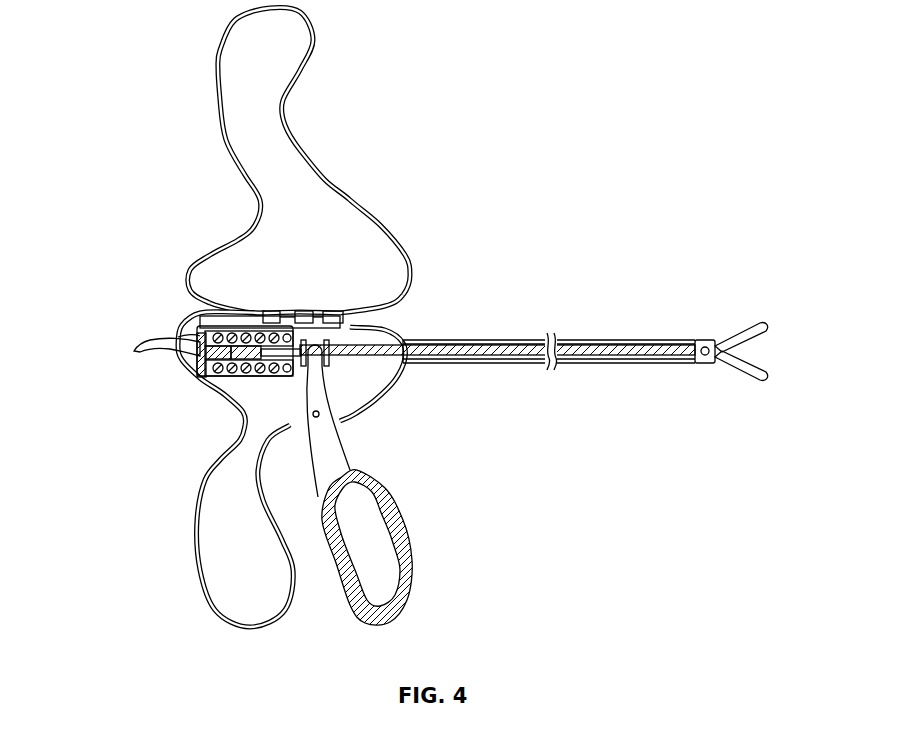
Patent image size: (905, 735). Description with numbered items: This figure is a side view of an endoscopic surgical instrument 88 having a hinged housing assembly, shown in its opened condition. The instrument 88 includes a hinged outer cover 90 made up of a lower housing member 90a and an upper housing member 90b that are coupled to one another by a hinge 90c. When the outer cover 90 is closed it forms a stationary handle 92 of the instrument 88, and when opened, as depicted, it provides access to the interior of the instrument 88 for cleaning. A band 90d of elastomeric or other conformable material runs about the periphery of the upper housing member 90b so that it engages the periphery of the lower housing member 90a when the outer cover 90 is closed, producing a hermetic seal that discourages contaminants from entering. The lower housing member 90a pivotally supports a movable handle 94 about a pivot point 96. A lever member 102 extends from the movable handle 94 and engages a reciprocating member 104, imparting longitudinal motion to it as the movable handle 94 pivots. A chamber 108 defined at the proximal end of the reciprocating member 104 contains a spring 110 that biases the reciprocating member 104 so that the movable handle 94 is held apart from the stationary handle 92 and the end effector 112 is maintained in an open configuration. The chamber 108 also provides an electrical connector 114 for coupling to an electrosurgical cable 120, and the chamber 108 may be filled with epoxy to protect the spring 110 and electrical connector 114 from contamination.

The instrument 88 is at (133, 38).
The hinged outer cover 90 is at (180, 522).
The lower housing member 90a is at (253, 442).
The upper housing member 90b is at (265, 98).
The hinge 90c is at (335, 312).
The band 90d is at (285, 115).
The stationary handle 92 is at (206, 617).
The movable handle 94 is at (390, 512).
The pivot point 96 is at (320, 418).
The lever member 102 is at (318, 395).
The reciprocating member 104 is at (372, 345).
The chamber 108 is at (222, 370).
The spring 110 is at (222, 338).
The end effector 112 is at (752, 302).
The electrical connector 114 is at (202, 340).
The electrosurgical cable 120 is at (133, 366).